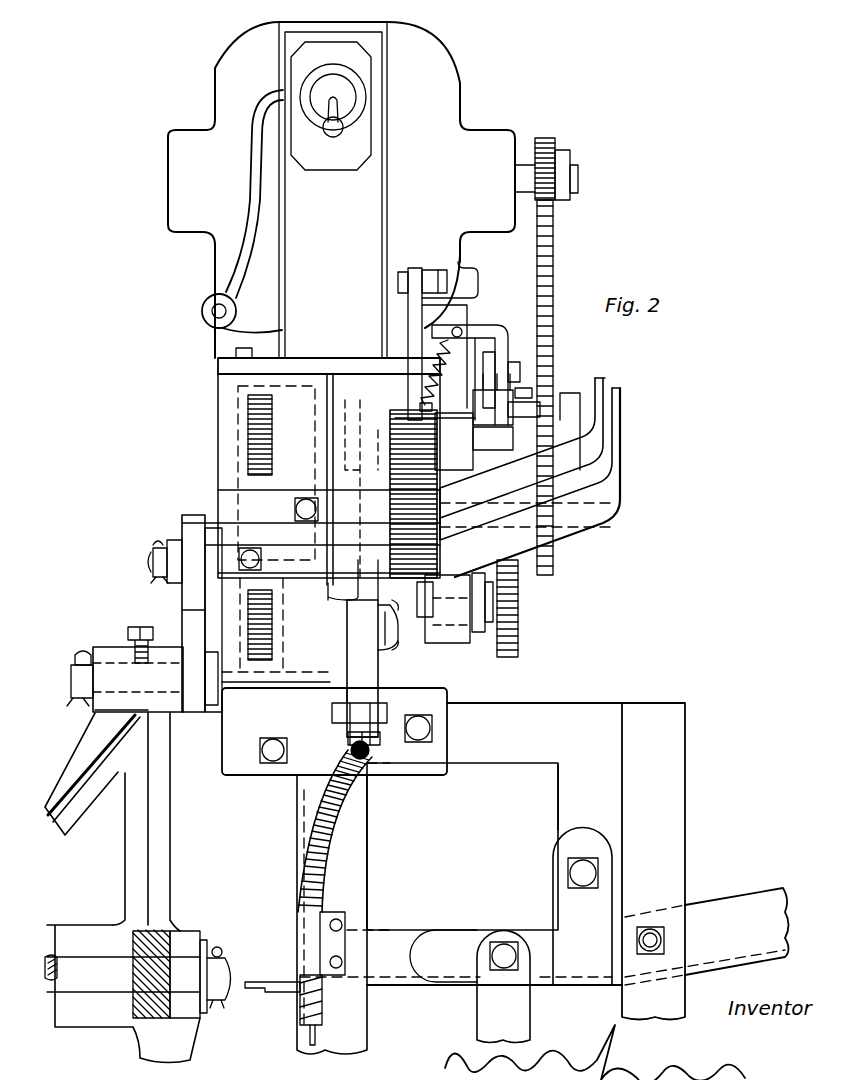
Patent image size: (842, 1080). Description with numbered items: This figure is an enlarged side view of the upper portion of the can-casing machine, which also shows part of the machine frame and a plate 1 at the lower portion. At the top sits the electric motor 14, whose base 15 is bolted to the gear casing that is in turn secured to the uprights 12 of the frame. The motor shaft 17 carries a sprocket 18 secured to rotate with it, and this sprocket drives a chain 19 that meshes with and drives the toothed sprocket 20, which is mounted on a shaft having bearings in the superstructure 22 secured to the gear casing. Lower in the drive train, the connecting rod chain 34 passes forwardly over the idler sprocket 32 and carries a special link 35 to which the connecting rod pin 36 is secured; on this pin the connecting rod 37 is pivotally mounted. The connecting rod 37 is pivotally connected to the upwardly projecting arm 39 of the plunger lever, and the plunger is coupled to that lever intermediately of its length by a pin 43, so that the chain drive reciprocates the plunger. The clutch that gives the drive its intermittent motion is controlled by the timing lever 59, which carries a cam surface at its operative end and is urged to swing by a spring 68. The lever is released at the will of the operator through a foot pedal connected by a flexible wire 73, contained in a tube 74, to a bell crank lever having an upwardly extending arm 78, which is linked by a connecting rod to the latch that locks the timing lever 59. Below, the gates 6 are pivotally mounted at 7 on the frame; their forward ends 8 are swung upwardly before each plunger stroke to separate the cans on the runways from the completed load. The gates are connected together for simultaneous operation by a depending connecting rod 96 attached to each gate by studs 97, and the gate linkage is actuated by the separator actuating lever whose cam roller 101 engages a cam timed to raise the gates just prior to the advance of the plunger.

The electric motor 14 is at (443, 59).
The sprocket 18 is at (563, 150).
The motor shaft 17 is at (578, 168).
The chain 19 is at (553, 258).
The upwardly extending arm 78 is at (408, 330).
The timing lever 59 is at (483, 327).
The spring 68 is at (450, 355).
The motor base 15 is at (218, 365).
The connecting rod chain 34 is at (236, 400).
The idler sprocket 32 is at (246, 432).
The special link 35 is at (240, 525).
The connecting rod pin 36 is at (150, 561).
The connecting rod 37 is at (188, 623).
The toothed sprocket 20 is at (563, 393).
The superstructure 22 is at (590, 521).
The cam roller 101 is at (445, 640).
The upwardly projecting arm 39 is at (165, 845).
The pin 43 is at (245, 963).
The plate 1 is at (248, 984).
The flexible wire 73 is at (300, 1040).
The uprights 12 is at (360, 810).
The tube 74 is at (333, 847).
The forward ends of gates 8 is at (330, 925).
The gates 6 is at (385, 940).
The studs 97 is at (505, 950).
The connecting rod 96 is at (480, 1020).
The gate pivot 7 is at (583, 867).